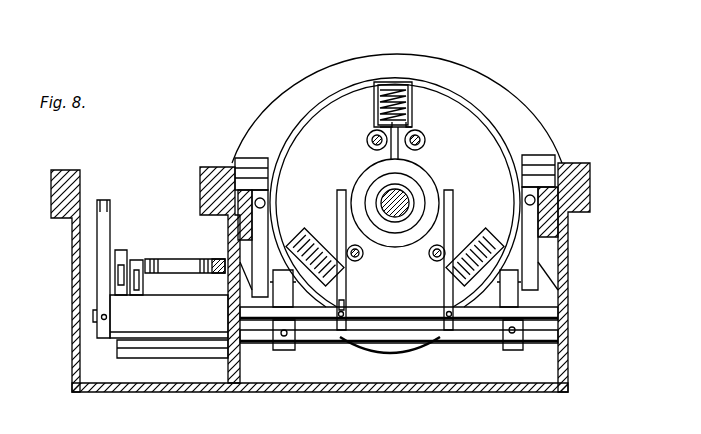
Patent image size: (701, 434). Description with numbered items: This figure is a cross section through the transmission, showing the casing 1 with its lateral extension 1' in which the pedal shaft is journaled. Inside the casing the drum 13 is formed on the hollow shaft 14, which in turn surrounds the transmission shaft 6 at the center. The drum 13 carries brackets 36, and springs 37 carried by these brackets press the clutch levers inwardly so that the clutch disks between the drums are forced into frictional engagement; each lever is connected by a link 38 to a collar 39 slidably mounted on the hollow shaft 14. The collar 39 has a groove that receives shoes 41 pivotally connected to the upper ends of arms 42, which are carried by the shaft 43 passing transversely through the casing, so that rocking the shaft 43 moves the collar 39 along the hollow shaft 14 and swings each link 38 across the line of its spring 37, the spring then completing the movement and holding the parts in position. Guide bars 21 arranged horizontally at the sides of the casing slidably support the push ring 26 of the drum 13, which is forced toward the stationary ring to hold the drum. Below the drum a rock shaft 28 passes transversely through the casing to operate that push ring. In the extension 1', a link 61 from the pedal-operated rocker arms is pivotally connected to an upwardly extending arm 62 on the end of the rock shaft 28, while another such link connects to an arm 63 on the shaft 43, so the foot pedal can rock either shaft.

The extension of the casing 1' is at (54, 281).
The casing 1 is at (341, 277).
The guide bars 21 is at (568, 230).
The push ring 26 is at (385, 60).
The drum 13 is at (473, 117).
The collar 39 is at (360, 188).
The hollow shaft 14 is at (393, 212).
The shoes 41 is at (355, 178).
The arms 42 is at (446, 282).
The brackets 36 is at (374, 112).
The springs 37 is at (412, 112).
The transmission shaft 6 is at (391, 190).
The link 38 is at (410, 155).
The shaft 43 is at (428, 312).
The rock shaft 28 is at (340, 337).
The arm 63 is at (103, 238).
The upwardly extending arms 62 is at (118, 288).
The link 61 is at (172, 258).